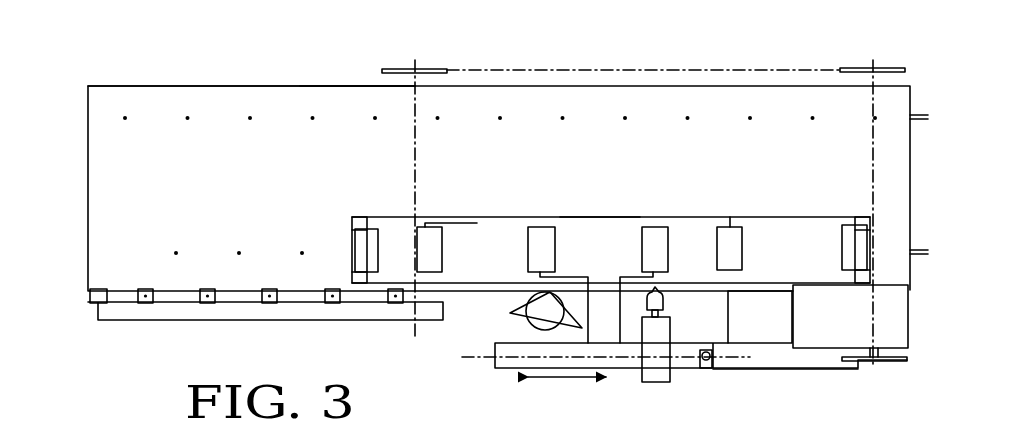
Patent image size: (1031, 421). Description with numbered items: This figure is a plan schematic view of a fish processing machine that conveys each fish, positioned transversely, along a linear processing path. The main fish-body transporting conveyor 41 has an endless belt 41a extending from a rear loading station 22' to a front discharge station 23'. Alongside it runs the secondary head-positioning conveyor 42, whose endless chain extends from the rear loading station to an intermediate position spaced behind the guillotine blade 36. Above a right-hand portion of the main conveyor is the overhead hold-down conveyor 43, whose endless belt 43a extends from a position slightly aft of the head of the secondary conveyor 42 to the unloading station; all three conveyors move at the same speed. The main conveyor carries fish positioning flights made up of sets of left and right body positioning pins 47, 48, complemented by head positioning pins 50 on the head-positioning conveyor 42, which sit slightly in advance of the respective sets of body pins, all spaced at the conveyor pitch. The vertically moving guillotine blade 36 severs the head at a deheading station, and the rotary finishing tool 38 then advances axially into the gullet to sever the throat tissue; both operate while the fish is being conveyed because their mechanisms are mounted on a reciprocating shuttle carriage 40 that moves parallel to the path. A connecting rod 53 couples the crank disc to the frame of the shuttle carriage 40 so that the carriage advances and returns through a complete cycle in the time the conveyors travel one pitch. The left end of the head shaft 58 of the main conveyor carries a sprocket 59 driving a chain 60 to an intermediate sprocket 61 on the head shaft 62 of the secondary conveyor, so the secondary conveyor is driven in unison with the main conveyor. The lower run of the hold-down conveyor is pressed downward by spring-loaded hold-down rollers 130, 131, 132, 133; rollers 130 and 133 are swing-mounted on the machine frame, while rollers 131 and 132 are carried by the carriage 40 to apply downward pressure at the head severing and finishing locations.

The rear loading station 22' is at (229, 188).
The front discharge station 23' is at (693, 188).
The main fish-body transporting conveyor 41 is at (258, 101).
The endless belt 41a is at (338, 105).
The left body positioning pin 47 is at (125, 121).
The right body positioning pin 48 is at (113, 257).
The intermediate sprocket 61 is at (438, 71).
The chain 60 is at (618, 70).
The sprocket 59 is at (858, 58).
The head shaft 58 is at (883, 86).
The head shaft 62 is at (413, 80).
The overhead hold-down conveyor 43 is at (546, 216).
The endless belt 43a is at (622, 205).
The hold-down roller 130 is at (420, 240).
The hold-down roller 131 is at (533, 240).
The hold-down roller 132 is at (652, 245).
The hold-down roller 133 is at (727, 242).
The guillotine blade 36 is at (526, 312).
The rotary finishing tool 38 is at (661, 298).
The shuttle carriage 40 is at (512, 350).
The connecting rod 53 is at (757, 369).
The secondary head-positioning conveyor 42 is at (250, 303).
The head positioning pin 50 is at (89, 296).